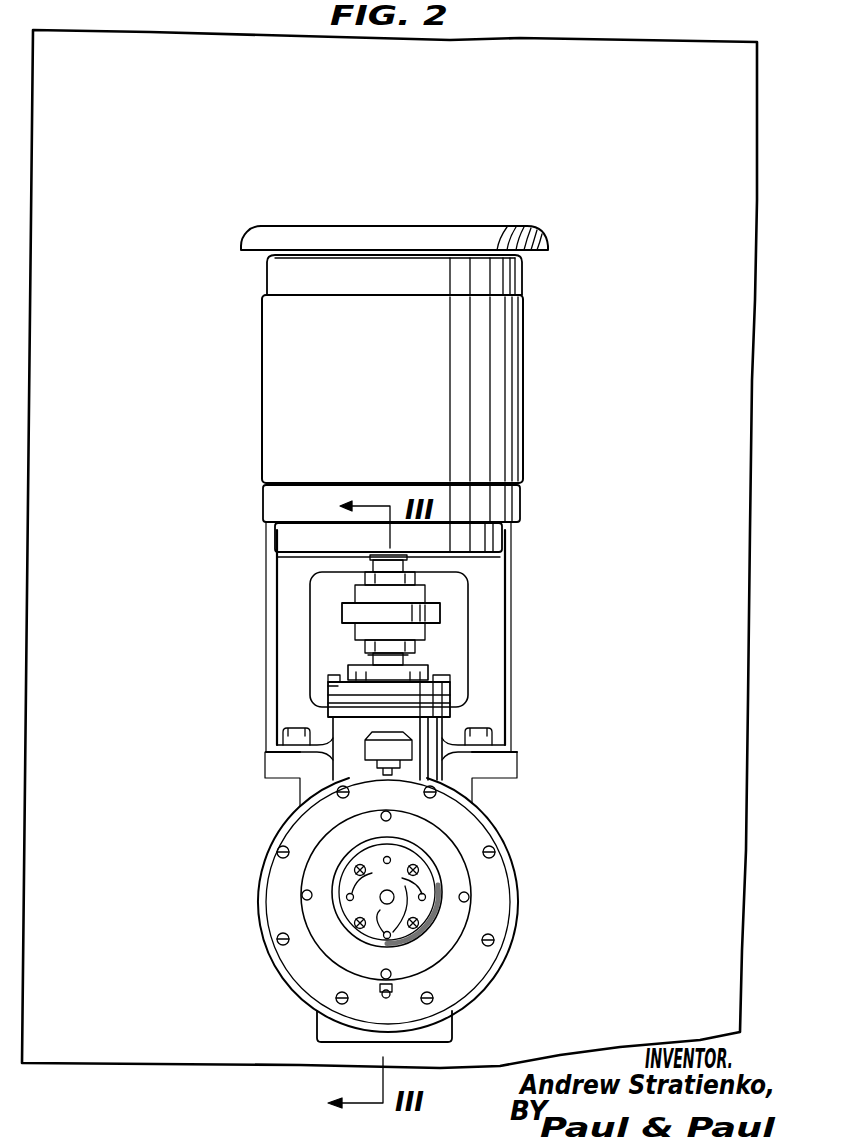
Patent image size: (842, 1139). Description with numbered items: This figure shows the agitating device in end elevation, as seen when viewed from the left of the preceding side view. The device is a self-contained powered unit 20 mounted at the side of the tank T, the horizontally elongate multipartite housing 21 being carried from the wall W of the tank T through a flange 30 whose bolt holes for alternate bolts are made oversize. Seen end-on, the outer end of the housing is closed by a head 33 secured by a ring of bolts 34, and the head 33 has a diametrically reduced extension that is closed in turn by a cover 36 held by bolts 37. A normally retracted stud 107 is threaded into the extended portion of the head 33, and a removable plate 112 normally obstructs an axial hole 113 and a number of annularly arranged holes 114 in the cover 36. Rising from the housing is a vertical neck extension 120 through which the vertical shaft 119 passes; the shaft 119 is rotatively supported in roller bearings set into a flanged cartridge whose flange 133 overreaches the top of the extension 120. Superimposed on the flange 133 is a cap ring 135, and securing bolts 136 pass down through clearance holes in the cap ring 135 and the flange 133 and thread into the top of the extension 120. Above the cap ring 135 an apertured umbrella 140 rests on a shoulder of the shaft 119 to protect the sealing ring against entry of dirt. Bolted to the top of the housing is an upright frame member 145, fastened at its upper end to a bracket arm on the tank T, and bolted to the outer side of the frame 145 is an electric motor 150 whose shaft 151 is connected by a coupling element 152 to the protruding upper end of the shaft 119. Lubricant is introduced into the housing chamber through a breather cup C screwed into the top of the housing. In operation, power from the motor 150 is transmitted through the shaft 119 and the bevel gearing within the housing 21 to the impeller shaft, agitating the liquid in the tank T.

The self-contained powered unit 20 is at (238, 385).
The housing 21 is at (272, 810).
The flange 30 is at (268, 930).
The head 33 is at (487, 903).
The bolts 34 is at (340, 796).
The cover 36 is at (458, 880).
The bolts 37 is at (382, 818).
The stud 107 is at (385, 985).
The removable plate 112 is at (398, 857).
The axial hole 113 is at (391, 902).
The annularly arranged holes 114 is at (384, 862).
The vertical shaft 119 is at (410, 658).
The vertical neck extension 120 is at (432, 733).
The flange 133 is at (455, 697).
The cap ring 135 is at (335, 686).
The securing bolts 136 is at (332, 680).
The apertured umbrella 140 is at (430, 670).
The upright frame member 145 is at (495, 606).
The electric motor 150 is at (500, 374).
The motor shaft 151 is at (372, 578).
The coupling element 152 is at (455, 600).
The breather cup C is at (368, 753).
The tank T is at (727, 38).
The wall W is at (720, 703).